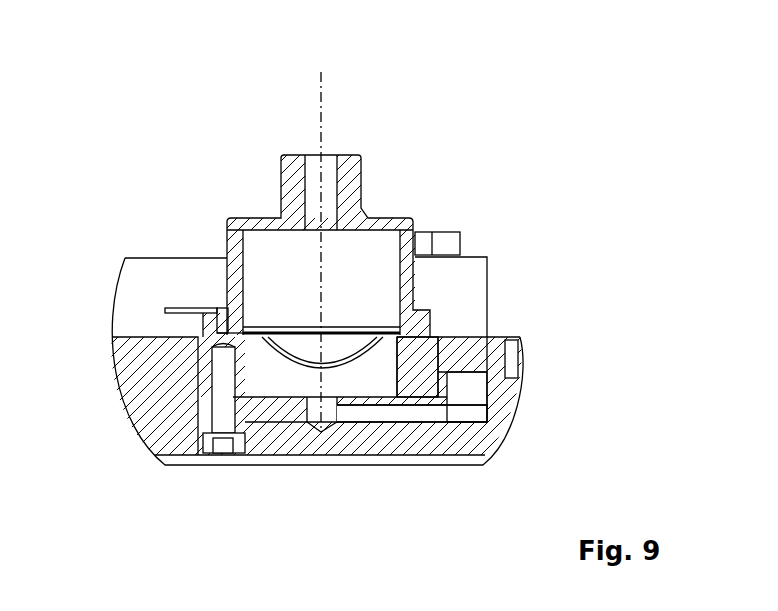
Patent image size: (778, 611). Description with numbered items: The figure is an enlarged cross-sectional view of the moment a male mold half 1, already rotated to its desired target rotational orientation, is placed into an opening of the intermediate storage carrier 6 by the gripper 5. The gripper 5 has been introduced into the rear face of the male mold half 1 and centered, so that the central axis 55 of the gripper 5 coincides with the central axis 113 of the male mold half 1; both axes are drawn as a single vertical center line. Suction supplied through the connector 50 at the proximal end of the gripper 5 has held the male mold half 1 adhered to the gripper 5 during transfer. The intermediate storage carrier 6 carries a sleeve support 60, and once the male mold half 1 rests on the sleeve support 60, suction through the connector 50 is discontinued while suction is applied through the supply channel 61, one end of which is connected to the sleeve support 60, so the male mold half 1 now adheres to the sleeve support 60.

The male mold half 1 is at (292, 372).
The gripper 5 is at (352, 284).
The intermediate storage carrier 6 is at (148, 405).
The connector 50 is at (290, 172).
The central axis of gripper 55 is at (236, 226).
The sleeve support 60 is at (423, 343).
The supply channel 61 is at (372, 413).
The central axis of male mold half 113 is at (321, 72).